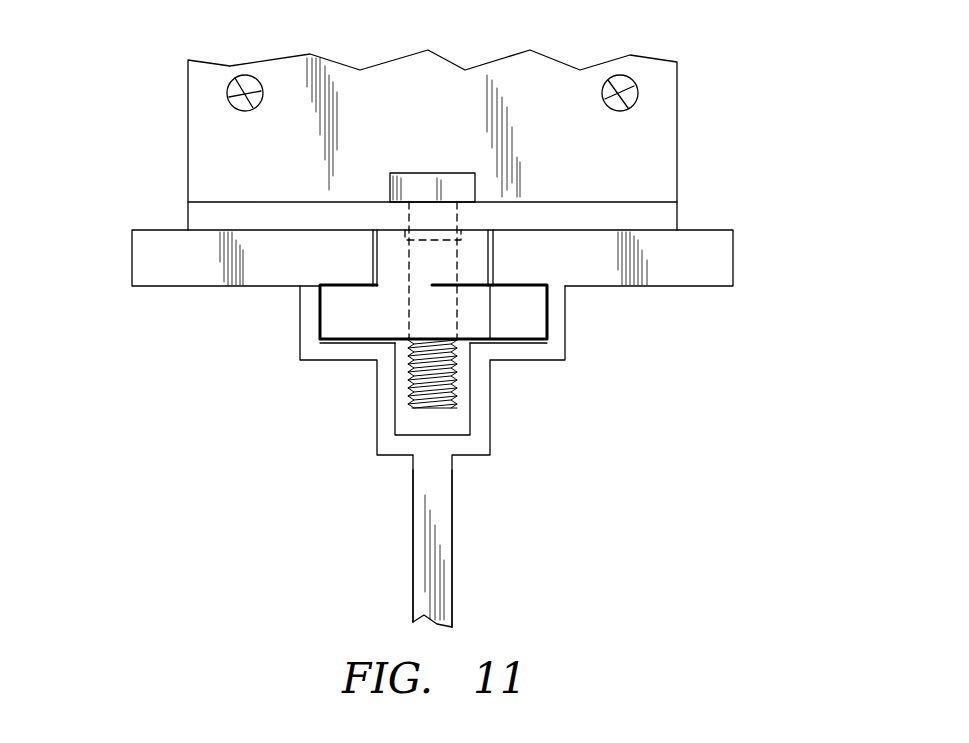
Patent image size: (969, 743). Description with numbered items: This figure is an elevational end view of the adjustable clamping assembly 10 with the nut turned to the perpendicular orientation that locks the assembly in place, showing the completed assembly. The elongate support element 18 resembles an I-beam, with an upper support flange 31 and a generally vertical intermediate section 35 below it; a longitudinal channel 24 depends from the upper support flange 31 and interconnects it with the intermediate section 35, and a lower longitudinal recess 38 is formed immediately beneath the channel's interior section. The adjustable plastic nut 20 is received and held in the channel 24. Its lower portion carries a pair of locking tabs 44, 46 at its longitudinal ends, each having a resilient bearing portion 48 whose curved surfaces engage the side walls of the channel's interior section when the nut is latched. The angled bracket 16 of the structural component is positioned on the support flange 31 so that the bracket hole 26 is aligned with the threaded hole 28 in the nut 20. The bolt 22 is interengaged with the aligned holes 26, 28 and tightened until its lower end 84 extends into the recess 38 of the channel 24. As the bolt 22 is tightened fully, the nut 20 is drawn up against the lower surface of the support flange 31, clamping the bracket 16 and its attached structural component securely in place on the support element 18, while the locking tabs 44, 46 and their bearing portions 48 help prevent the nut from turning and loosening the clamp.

The adjustable clamping assembly 10 is at (734, 156).
The angled bracket 16 is at (188, 92).
The support element 18 is at (132, 253).
The adjustable plastic nut 20 is at (370, 318).
The bolt 22 is at (448, 173).
The longitudinal channel 24 is at (342, 284).
The hole 26 is at (457, 217).
The hole 28 is at (457, 323).
The upper support flange 31 is at (700, 230).
The intermediate section 35 is at (413, 527).
The lower longitudinal recess 38 is at (410, 425).
The locking tab 44 is at (335, 318).
The locking tab 46 is at (512, 320).
The resilient bearing portion 48 is at (320, 320).
The lower end 84 is at (455, 390).